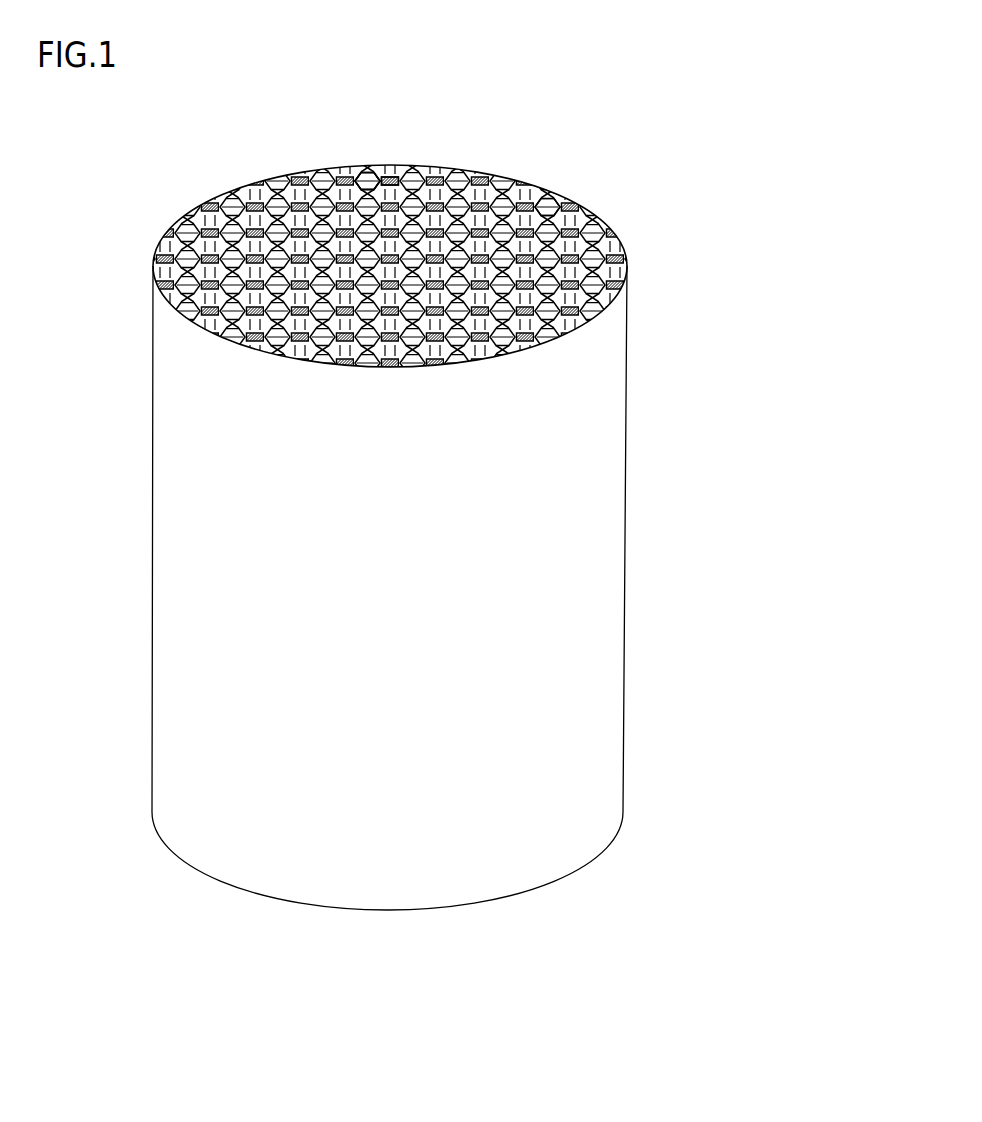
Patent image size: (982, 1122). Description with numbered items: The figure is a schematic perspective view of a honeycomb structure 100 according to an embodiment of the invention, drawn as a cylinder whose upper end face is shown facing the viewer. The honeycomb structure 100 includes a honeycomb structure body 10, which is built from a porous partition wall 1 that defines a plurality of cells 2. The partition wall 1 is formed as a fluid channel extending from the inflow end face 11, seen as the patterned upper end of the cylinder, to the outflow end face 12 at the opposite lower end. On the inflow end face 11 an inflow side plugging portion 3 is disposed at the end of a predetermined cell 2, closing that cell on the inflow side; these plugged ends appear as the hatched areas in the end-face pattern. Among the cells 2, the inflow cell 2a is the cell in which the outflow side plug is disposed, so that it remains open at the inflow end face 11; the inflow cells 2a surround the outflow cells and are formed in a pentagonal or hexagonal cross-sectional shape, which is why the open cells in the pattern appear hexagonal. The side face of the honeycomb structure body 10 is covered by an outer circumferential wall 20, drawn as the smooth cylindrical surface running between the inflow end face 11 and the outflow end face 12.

The partition wall 1 is at (548, 202).
The cells 2 is at (367, 173).
The inflow cell 2a is at (367, 181).
The inflow side plugging portion 3 is at (395, 177).
The honeycomb structure body 10 is at (411, 517).
The inflow end face 11 is at (190, 218).
The outflow end face 12 is at (577, 874).
The outer circumferential wall 20 is at (624, 608).
The honeycomb structure 100 is at (411, 517).